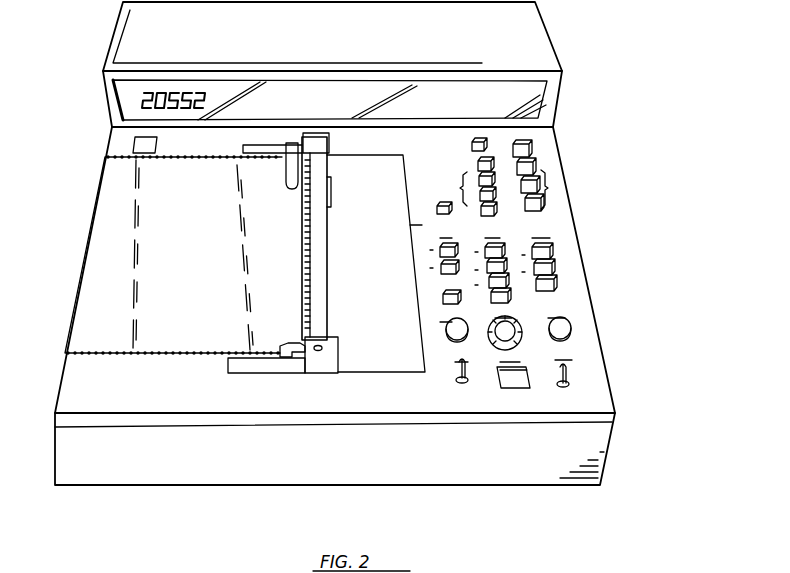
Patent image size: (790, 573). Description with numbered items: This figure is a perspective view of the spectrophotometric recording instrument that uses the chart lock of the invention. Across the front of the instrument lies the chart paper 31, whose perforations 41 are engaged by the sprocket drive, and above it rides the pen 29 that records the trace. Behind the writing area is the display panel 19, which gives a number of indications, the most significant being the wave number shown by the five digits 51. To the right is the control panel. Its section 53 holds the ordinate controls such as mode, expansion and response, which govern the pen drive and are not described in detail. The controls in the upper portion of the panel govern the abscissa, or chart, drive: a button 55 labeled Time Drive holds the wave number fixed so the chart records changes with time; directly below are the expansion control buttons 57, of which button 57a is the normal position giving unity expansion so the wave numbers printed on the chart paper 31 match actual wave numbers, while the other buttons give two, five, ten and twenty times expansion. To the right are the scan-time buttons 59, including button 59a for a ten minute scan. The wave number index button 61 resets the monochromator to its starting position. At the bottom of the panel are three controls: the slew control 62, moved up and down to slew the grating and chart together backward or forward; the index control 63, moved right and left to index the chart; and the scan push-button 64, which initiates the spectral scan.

The display panel 19 is at (136, 68).
The five digits 51 is at (206, 88).
The ordinate control section 53 is at (600, 281).
The chart paper 31 is at (190, 286).
The perforations 41 is at (157, 354).
The pen 29 is at (286, 181).
The time drive button 55 is at (470, 143).
The normal expansion button 57a is at (488, 157).
The expansion control buttons 57 is at (460, 189).
The ten minute scan button 59a is at (527, 163).
The scan time buttons 59 is at (552, 188).
The wave number index button 61 is at (437, 210).
The slew control 62 is at (575, 373).
The index control 63 is at (456, 376).
The scan push-button 64 is at (523, 389).